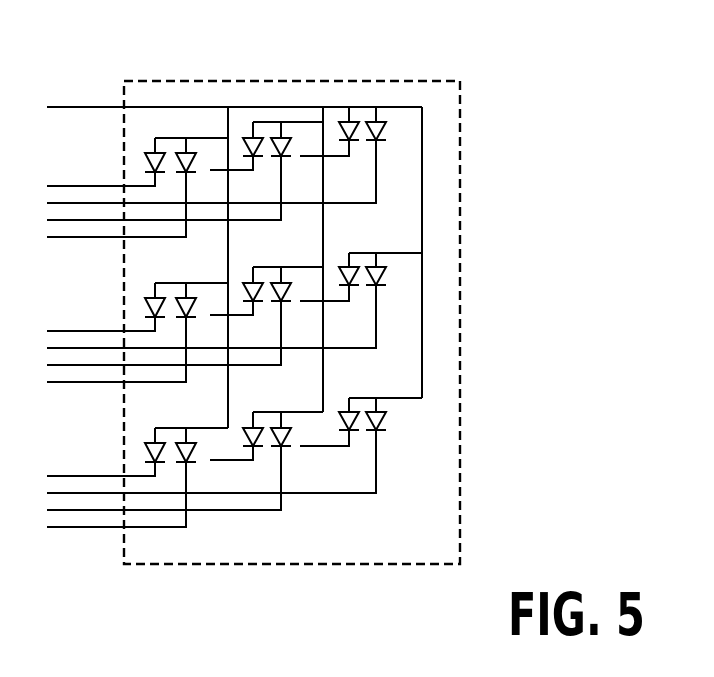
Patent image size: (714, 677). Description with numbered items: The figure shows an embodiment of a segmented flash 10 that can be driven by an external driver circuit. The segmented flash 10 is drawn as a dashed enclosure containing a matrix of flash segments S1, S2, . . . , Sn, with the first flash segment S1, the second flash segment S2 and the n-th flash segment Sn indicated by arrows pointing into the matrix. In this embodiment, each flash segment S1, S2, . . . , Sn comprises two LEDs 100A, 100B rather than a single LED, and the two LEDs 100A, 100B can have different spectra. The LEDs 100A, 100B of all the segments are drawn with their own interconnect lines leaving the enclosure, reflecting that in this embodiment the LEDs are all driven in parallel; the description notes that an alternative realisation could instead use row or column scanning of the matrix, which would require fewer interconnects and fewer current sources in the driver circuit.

The segmented flash 10 is at (410, 80).
The LED 100A is at (387, 134).
The LED 100B is at (355, 145).
The flash segment S1 is at (130, 159).
The flash segment S2 is at (130, 304).
The flash segment Sn is at (401, 425).